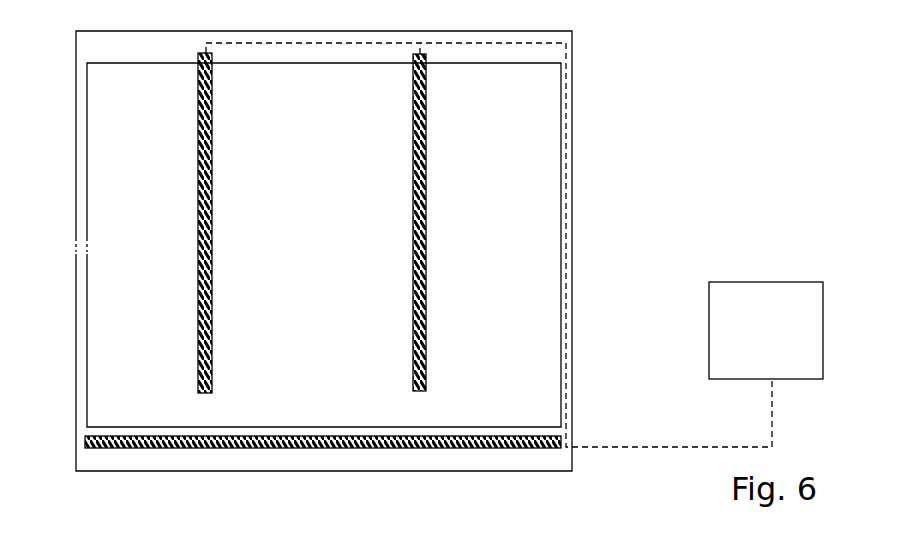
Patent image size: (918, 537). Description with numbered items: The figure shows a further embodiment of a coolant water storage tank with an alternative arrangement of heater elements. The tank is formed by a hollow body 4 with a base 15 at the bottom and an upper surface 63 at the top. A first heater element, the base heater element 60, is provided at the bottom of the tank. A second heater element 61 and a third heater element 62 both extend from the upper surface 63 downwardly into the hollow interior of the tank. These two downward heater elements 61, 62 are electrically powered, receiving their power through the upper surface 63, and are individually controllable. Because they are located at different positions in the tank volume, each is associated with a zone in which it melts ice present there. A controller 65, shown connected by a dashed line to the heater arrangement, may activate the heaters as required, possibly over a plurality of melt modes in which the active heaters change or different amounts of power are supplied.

The base of the water storage tank 15 is at (585, 422).
The upper surface 63 is at (152, 63).
The second heater element 61 is at (199, 168).
The third heater element 62 is at (415, 168).
The base heater element 60 is at (128, 443).
The hollow body 4 is at (562, 305).
The controller 65 is at (743, 346).